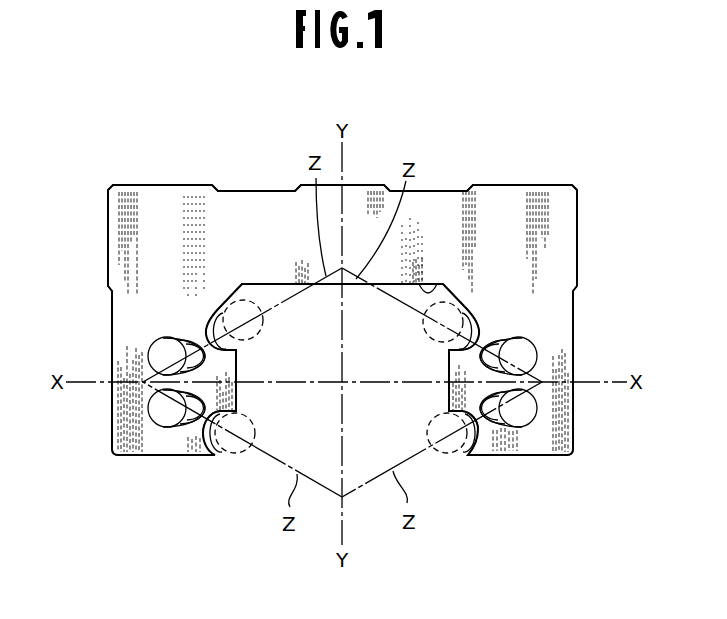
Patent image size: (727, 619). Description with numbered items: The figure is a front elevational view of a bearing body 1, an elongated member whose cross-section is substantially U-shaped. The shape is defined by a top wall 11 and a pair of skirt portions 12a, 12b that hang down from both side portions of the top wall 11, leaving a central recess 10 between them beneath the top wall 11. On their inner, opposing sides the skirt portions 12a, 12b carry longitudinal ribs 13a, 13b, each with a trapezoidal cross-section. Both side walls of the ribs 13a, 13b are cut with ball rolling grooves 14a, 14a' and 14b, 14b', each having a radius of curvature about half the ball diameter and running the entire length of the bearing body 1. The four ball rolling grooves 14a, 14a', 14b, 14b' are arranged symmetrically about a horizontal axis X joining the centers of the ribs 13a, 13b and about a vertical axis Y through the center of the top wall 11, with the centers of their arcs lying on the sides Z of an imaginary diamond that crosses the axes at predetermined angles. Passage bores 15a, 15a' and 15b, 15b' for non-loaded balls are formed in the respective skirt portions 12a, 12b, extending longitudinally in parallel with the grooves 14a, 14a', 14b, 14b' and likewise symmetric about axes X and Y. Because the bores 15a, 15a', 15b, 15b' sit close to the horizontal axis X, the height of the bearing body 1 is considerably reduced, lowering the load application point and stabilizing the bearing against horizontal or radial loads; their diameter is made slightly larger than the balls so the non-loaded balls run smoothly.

The bearing body 1 is at (569, 180).
The central recess 10 is at (434, 284).
The top wall 11 is at (257, 204).
The skirt portion 12a is at (124, 306).
The skirt portion 12b is at (554, 316).
The longitudinal rib 13a is at (226, 370).
The longitudinal rib 13b is at (462, 368).
The ball rolling groove 14a is at (245, 299).
The ball rolling groove 14a' is at (229, 458).
The ball rolling groove 14b is at (418, 317).
The ball rolling groove 14b' is at (422, 433).
The passage bore for non-loaded balls 15a is at (127, 353).
The passage bore for non-loaded balls 15a' is at (129, 410).
The passage bore for non-loaded balls 15b is at (557, 356).
The passage bore for non-loaded balls 15b' is at (560, 417).